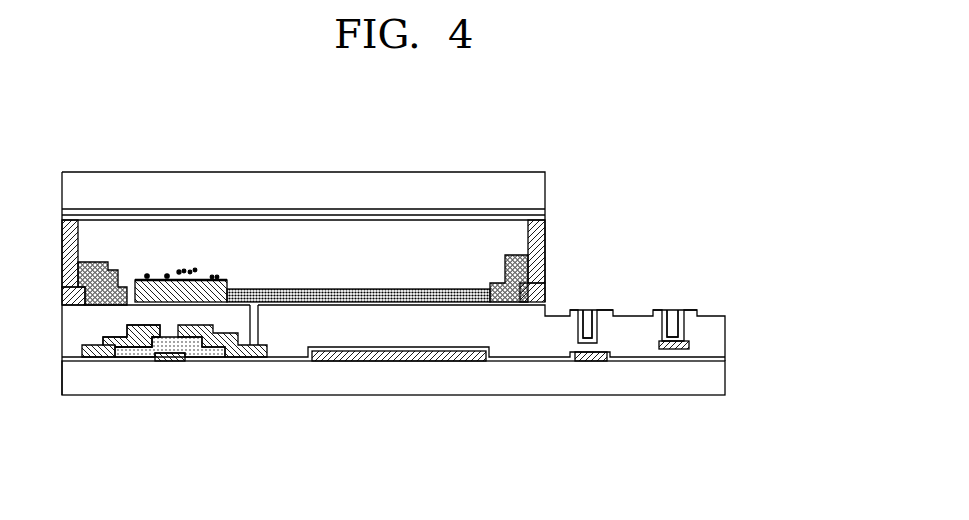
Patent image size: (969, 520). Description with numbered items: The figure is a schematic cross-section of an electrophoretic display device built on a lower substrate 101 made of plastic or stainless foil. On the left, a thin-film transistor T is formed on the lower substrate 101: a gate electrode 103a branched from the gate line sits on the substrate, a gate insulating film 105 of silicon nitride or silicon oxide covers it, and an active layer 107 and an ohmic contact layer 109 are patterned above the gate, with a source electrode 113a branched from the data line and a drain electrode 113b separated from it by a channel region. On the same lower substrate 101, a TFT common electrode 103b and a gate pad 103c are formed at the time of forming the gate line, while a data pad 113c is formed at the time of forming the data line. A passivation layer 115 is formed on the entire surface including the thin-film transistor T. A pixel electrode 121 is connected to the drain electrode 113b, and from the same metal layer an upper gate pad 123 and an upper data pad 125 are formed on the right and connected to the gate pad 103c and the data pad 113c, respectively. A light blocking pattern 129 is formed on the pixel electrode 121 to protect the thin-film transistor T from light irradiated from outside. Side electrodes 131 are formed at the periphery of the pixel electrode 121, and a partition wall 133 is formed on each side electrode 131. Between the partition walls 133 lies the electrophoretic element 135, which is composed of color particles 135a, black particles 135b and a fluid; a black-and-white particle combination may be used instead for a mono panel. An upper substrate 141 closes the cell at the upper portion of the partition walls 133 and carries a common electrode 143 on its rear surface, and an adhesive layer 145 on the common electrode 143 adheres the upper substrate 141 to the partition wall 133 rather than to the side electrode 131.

The lower substrate 101 is at (724, 373).
The gate electrode 103a is at (170, 361).
The TFT common electrode 103b is at (368, 361).
The gate pad 103c is at (592, 361).
The gate insulating film 105 is at (724, 354).
The active layer 107 is at (214, 345).
The ohmic contact layer 109 is at (130, 345).
The source electrode 113a is at (93, 357).
The drain electrode 113b is at (253, 357).
The data pad 113c is at (677, 349).
The passivation layer 115 is at (724, 327).
The pixel electrode 121 is at (303, 305).
The upper gate pad 123 is at (602, 309).
The upper data pad 125 is at (685, 309).
The light blocking pattern 129 is at (205, 280).
The side electrode 131 is at (543, 293).
The partition wall 133 is at (70, 222).
The electrophoretic element 135 is at (293, 225).
The color particles 135a is at (503, 302).
The black particles 135b is at (443, 302).
The upper substrate 141 is at (459, 182).
The common electrode 143 is at (410, 213).
The adhesive layer 145 is at (358, 218).
The thin-film transistor T is at (275, 446).